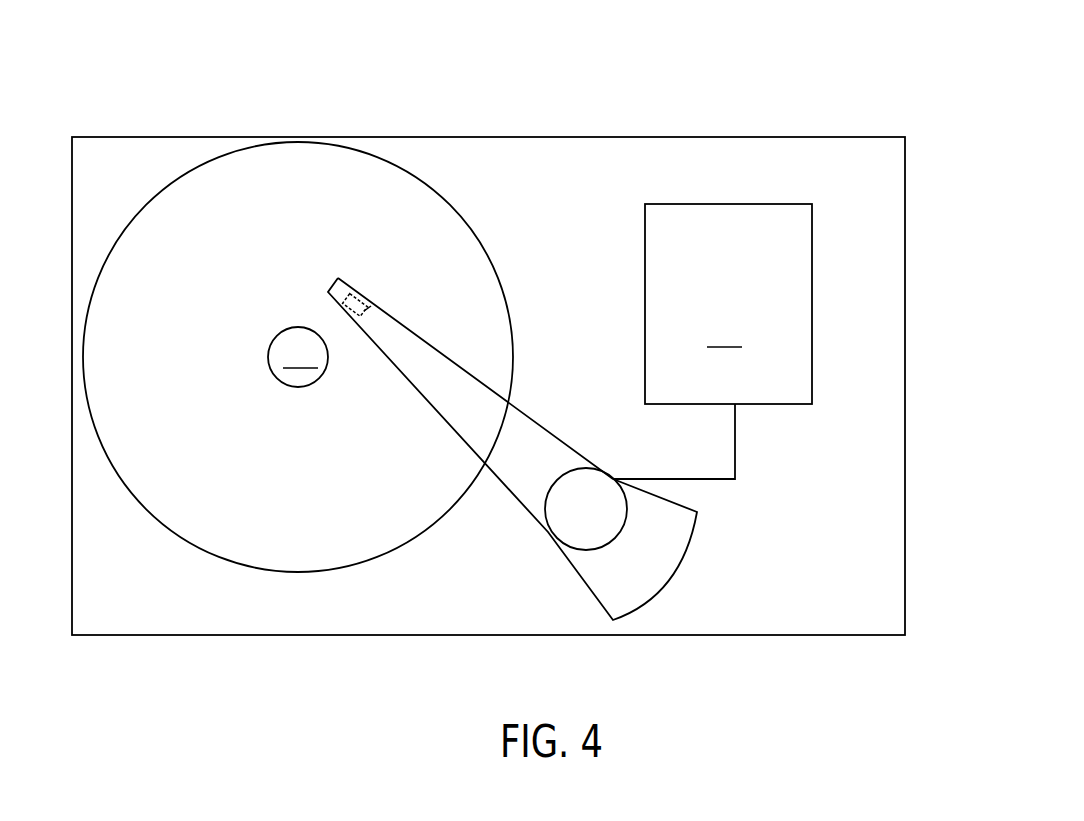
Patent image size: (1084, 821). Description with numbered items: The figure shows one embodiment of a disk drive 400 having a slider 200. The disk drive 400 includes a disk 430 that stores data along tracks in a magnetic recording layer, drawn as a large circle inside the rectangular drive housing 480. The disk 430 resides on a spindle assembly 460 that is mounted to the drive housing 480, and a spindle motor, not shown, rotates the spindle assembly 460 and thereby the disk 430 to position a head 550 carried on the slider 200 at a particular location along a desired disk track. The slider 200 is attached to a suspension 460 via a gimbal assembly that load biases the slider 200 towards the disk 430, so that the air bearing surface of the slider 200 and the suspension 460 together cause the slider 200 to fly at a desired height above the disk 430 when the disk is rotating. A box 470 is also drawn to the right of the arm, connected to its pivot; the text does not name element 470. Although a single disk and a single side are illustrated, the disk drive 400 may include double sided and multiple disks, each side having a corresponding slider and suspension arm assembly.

The disk drive 400 is at (878, 60).
The drive housing 480 is at (578, 137).
The disk 430 is at (197, 548).
The spindle assembly 460 is at (533, 412).
The controller 470 is at (712, 341).
The slider 200 is at (352, 290).
The head 550 is at (372, 303).